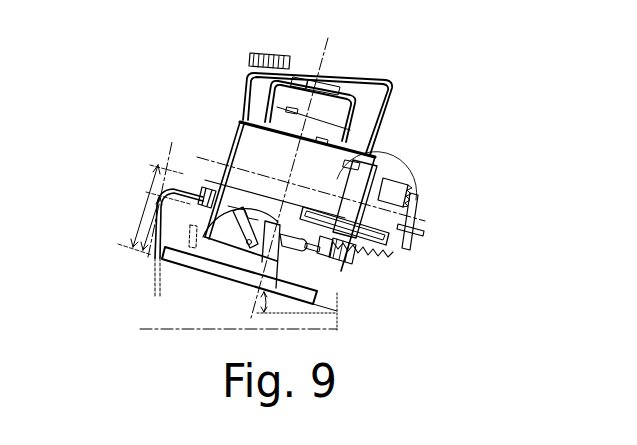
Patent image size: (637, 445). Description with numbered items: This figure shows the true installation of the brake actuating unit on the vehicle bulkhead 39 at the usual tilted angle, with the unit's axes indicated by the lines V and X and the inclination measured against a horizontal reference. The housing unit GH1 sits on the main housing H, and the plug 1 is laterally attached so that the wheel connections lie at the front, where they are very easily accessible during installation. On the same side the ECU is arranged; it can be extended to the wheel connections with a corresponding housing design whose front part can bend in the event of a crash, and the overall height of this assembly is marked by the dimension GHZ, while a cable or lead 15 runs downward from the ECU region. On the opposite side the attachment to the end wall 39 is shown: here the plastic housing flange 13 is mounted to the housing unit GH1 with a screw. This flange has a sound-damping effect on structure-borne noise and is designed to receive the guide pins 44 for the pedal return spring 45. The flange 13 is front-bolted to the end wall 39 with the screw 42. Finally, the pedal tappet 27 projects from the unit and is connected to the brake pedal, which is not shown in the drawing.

The vertical axis V is at (303, 164).
The transverse axis X is at (397, 153).
The plug 1 is at (209, 249).
The housing H is at (285, 196).
The housing unit GH1 is at (233, 152).
The bulkhead 39 is at (394, 114).
The element ECU is at (148, 200).
The total housing height GHZ is at (153, 168).
The cable 15 is at (153, 255).
The pedal return spring 45 is at (363, 262).
The plastic housing flange 13 is at (403, 187).
The pedal tappet 27 is at (412, 233).
The guide pins 44 is at (370, 257).
The screw 42 is at (342, 262).